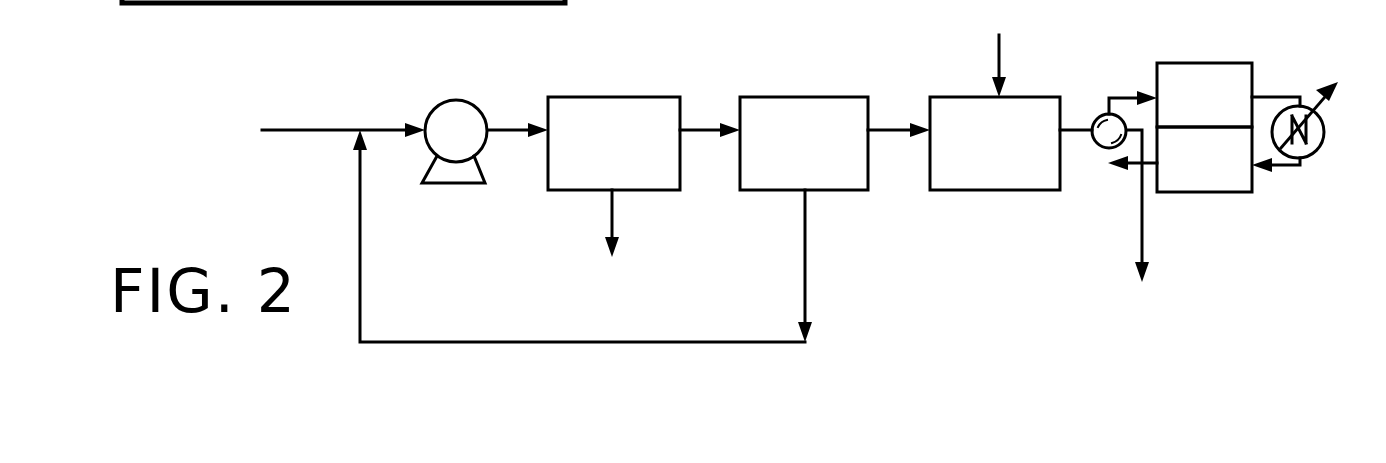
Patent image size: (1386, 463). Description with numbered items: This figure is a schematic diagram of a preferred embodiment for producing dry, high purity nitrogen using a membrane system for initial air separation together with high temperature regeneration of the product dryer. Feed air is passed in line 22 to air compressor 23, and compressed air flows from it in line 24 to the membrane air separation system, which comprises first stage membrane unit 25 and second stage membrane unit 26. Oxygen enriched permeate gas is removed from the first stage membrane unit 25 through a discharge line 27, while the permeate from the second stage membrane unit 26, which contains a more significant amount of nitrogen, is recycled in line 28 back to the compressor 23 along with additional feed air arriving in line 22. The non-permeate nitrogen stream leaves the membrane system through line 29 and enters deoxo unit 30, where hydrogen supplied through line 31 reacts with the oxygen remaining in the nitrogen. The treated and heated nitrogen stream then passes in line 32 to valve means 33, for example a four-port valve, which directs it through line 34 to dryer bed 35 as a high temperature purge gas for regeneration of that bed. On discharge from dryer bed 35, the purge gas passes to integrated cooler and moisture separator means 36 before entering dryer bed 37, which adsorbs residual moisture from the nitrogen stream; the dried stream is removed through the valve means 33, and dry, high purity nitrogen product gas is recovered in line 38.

The feed air line 22 is at (322, 125).
The air compressor 23 is at (440, 100).
The compressed air line 24 is at (511, 128).
The first stage membrane unit 25 is at (588, 97).
The second stage membrane unit 26 is at (768, 97).
The waste outlet line 27 is at (616, 223).
The recycle line 28 is at (808, 252).
The non-permeate nitrogen line 29 is at (889, 128).
The deoxo unit 30 is at (1038, 97).
The hydrogen line 31 is at (1002, 58).
The treated nitrogen line 32 is at (1076, 128).
The valve means 33 is at (1098, 146).
The purge gas line 34 is at (1129, 89).
The dryer bed 35 is at (1216, 63).
The integrated cooler and moisture separator means 36 is at (1284, 165).
The dryer bed 37 is at (1210, 193).
The product line 38 is at (1141, 215).